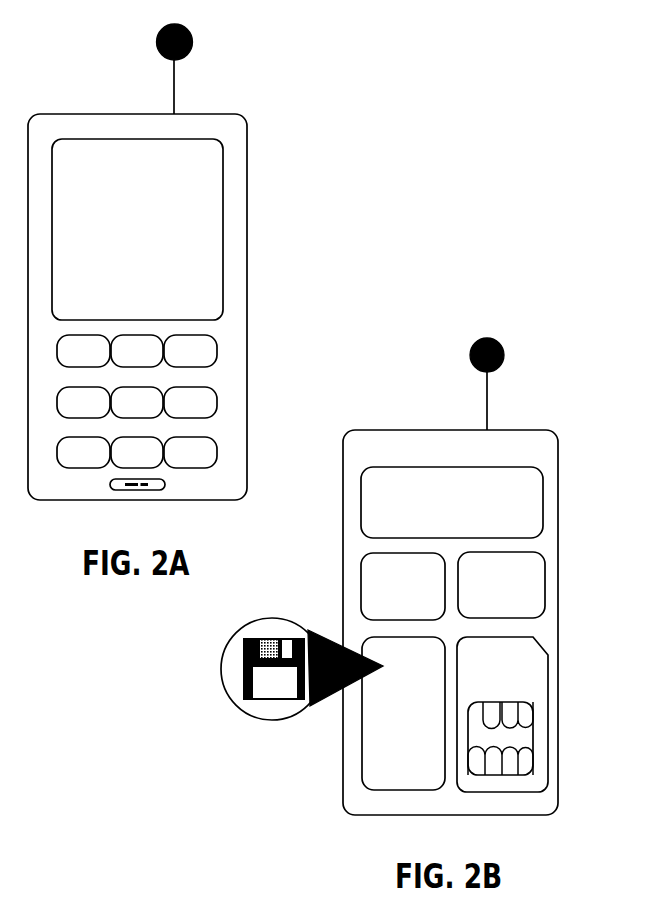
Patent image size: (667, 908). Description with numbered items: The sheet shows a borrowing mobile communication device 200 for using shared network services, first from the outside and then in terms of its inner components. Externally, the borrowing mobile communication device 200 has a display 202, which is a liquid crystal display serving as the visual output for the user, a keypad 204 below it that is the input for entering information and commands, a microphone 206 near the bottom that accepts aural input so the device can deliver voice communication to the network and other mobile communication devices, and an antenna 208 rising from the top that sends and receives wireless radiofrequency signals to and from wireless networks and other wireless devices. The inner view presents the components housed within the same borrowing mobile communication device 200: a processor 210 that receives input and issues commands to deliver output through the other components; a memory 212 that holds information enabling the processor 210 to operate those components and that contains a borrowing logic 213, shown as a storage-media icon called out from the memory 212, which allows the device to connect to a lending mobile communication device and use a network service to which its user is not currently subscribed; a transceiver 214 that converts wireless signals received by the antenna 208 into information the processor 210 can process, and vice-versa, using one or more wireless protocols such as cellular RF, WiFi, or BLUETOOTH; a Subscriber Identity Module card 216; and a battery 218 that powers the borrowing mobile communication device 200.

In FIG. 2A, the borrowing mobile communication device 200 is at (102, 114).
In FIG. 2B, the borrowing mobile communication device 200 is at (452, 430).
In FIG. 2A, the display 202 is at (223, 182).
In FIG. 2A, the keypad 204 is at (217, 350).
In FIG. 2A, the microphone 206 is at (135, 491).
In FIG. 2A, the antenna 208 is at (185, 53).
In FIG. 2B, the processor 210 is at (543, 583).
In FIG. 2B, the memory 212 is at (360, 717).
In FIG. 2B, the borrowing logic 213 is at (260, 700).
In FIG. 2B, the transceiver 214 is at (362, 588).
In FIG. 2B, the Subscriber Identity Module (SIM) Card 216 is at (548, 730).
In FIG. 2B, the battery 218 is at (543, 495).